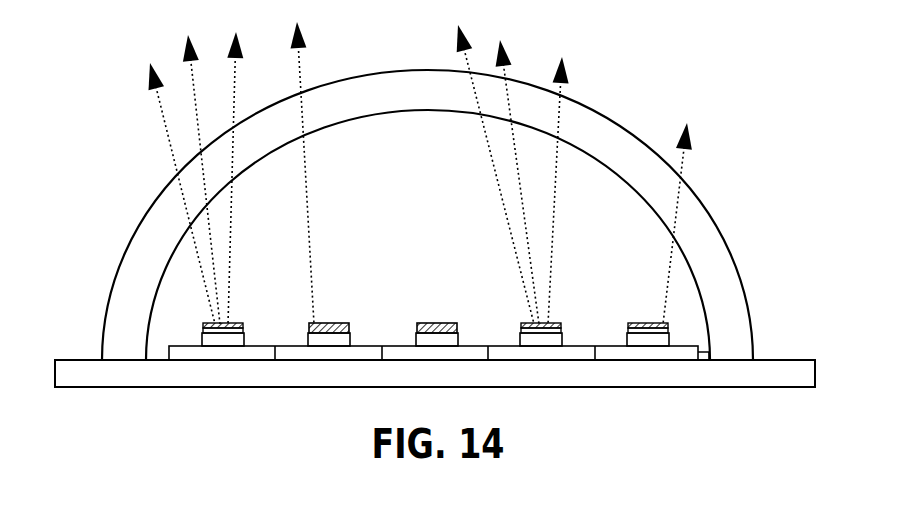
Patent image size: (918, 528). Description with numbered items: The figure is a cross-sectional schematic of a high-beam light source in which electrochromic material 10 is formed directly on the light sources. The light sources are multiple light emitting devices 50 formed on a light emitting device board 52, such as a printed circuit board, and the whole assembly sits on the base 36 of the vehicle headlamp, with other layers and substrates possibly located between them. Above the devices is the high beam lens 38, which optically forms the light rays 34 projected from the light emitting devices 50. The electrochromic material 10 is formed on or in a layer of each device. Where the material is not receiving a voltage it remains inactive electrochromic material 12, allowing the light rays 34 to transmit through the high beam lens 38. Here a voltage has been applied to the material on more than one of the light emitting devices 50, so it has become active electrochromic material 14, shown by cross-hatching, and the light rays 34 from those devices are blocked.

The electrochromic material 10 is at (670, 330).
The inactive electrochromic material 12 is at (203, 323).
The active electrochromic material 14 is at (309, 323).
The light rays 34 is at (178, 162).
The base 36 is at (258, 388).
The high beam lens 38 is at (718, 253).
The light emitting devices 50 is at (672, 338).
The light emitting device board 52 is at (708, 357).